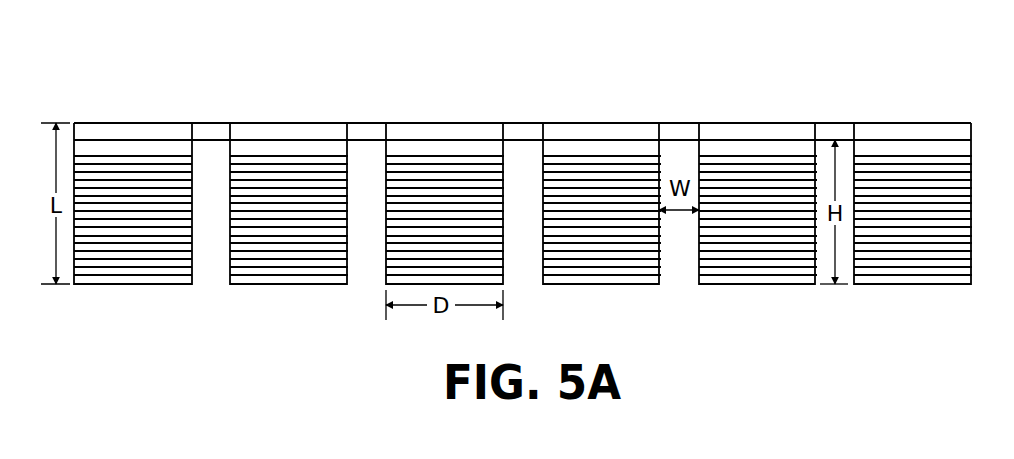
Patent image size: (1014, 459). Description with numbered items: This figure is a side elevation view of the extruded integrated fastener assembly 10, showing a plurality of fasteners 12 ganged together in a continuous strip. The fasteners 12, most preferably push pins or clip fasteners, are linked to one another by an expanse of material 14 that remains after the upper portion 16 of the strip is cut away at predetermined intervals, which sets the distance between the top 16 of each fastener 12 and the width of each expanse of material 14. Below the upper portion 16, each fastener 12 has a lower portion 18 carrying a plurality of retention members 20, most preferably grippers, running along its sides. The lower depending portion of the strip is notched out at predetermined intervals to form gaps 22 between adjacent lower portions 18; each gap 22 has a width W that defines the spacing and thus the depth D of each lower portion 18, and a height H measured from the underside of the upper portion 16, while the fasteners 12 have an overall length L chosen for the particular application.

The extruded integrated fastener assembly 10 is at (100, 105).
The fastener 12 is at (425, 122).
The expanse of material 14 is at (678, 128).
The upper portion 16 is at (272, 130).
The lower portion 18 is at (917, 190).
The retention member 20 is at (325, 255).
The gap 22 is at (680, 292).